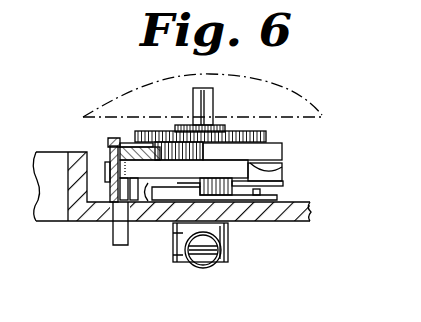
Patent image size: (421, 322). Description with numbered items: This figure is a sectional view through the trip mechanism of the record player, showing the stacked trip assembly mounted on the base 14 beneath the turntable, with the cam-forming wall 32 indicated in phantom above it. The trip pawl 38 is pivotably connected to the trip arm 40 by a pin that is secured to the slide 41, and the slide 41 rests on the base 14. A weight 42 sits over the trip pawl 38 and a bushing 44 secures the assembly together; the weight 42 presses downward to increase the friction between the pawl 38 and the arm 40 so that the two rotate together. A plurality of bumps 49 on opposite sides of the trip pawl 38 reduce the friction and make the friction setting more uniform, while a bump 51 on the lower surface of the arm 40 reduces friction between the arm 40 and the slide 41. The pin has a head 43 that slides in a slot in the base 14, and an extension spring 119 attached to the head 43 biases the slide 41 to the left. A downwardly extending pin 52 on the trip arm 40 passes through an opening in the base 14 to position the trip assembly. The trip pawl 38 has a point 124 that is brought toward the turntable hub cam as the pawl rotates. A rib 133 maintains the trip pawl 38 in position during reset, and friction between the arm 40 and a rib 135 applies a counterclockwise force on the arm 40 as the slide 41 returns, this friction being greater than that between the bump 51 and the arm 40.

The base 14 is at (73, 151).
The wall 32 is at (285, 87).
The trip pawl 38 is at (288, 143).
The trip arm 40 is at (286, 174).
The slide 41 is at (250, 186).
The weight 42 is at (249, 131).
The head 43 is at (228, 240).
The bushing 44 is at (193, 105).
The bumps 49 is at (286, 162).
The bump 51 is at (232, 184).
The pin 52 is at (110, 231).
The extension spring 119 is at (199, 266).
The point 124 is at (128, 142).
The rib 133 is at (106, 150).
The rib 135 is at (147, 203).